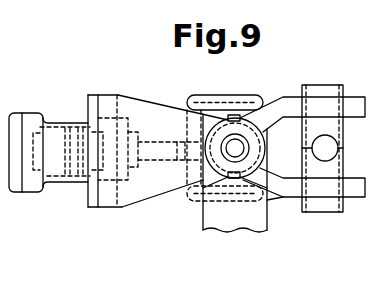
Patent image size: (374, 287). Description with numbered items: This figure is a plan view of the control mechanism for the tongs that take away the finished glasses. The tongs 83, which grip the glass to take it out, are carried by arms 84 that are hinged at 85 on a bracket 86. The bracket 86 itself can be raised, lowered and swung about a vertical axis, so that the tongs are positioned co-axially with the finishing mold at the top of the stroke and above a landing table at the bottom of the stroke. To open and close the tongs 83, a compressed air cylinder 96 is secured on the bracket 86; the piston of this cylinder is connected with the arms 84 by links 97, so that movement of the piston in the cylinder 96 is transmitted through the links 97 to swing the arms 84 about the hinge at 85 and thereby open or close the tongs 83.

The compressed air cylinder 96 is at (48, 122).
The links 97 is at (208, 103).
The hinge 85 is at (234, 149).
The bracket 86 is at (229, 203).
The arms 84 is at (352, 103).
The tongs 83 is at (338, 140).